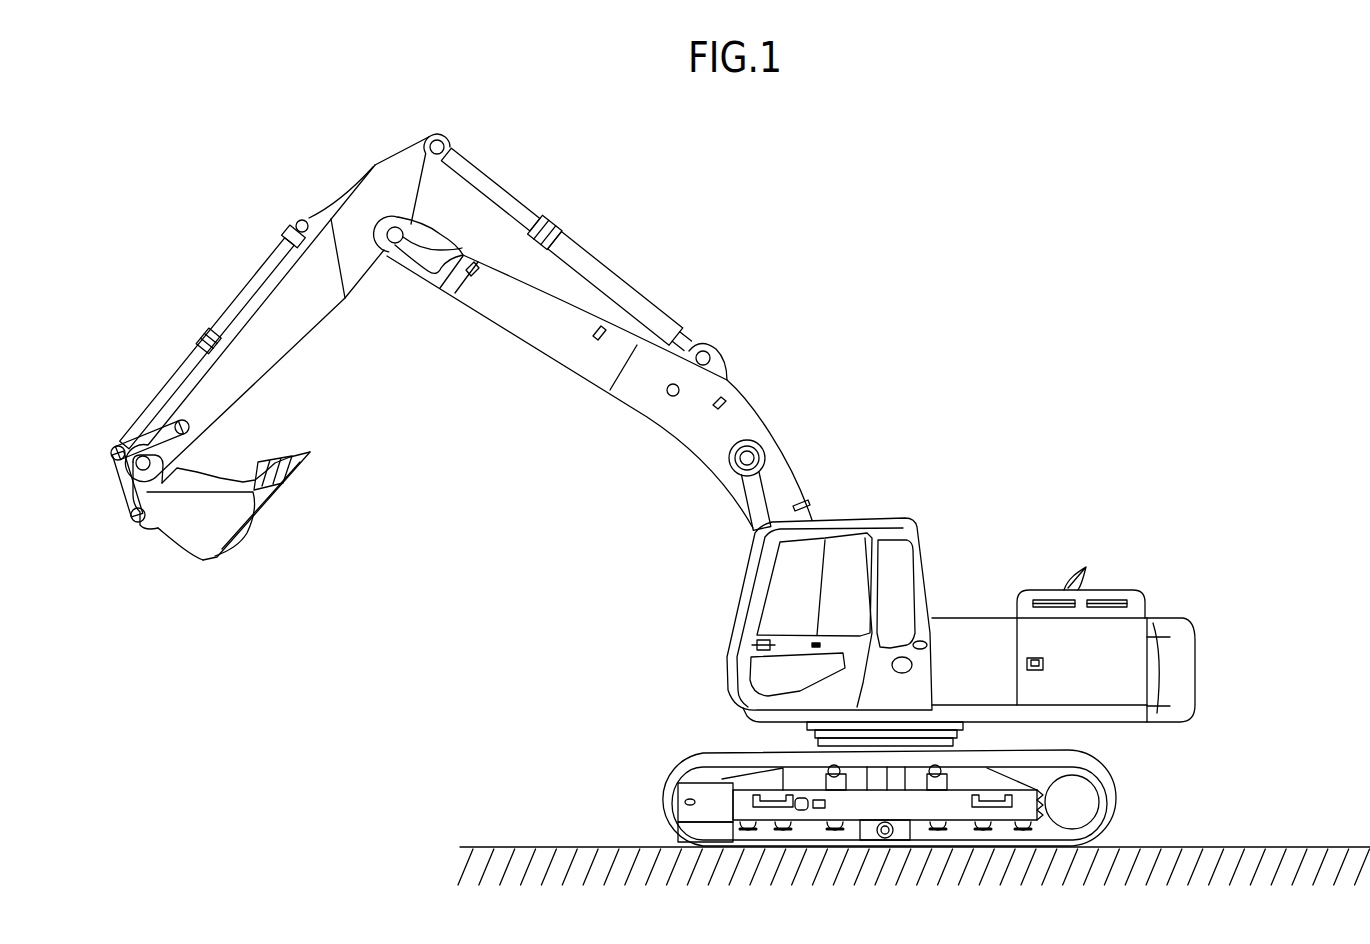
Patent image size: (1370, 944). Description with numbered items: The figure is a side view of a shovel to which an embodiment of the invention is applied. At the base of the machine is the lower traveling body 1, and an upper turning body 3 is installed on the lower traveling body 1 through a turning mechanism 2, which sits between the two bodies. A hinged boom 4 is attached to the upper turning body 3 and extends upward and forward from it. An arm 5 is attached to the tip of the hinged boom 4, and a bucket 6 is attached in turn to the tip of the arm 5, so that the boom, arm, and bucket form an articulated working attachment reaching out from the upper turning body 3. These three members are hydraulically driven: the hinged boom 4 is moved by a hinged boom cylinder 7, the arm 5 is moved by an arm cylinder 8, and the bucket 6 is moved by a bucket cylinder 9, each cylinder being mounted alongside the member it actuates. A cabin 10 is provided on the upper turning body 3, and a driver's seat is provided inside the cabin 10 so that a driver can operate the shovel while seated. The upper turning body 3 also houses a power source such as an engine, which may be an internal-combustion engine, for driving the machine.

The lower traveling body 1 is at (653, 796).
The turning mechanism 2 is at (958, 731).
The upper turning body 3 is at (978, 617).
The hinged boom 4 is at (647, 406).
The arm 5 is at (308, 314).
The bucket 6 is at (206, 556).
The hinged boom cylinder 7 is at (753, 502).
The arm cylinder 8 is at (633, 298).
The bucket cylinder 9 is at (243, 300).
The cabin 10 is at (908, 520).